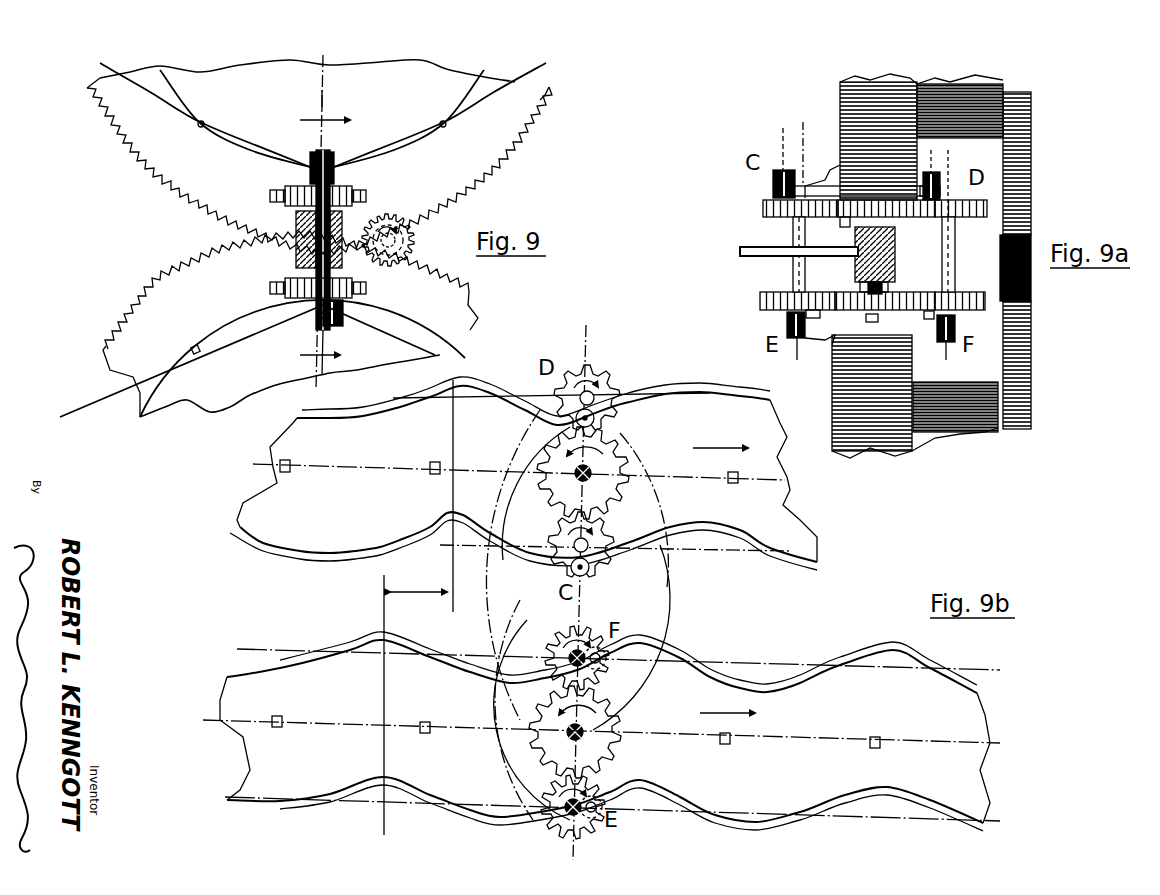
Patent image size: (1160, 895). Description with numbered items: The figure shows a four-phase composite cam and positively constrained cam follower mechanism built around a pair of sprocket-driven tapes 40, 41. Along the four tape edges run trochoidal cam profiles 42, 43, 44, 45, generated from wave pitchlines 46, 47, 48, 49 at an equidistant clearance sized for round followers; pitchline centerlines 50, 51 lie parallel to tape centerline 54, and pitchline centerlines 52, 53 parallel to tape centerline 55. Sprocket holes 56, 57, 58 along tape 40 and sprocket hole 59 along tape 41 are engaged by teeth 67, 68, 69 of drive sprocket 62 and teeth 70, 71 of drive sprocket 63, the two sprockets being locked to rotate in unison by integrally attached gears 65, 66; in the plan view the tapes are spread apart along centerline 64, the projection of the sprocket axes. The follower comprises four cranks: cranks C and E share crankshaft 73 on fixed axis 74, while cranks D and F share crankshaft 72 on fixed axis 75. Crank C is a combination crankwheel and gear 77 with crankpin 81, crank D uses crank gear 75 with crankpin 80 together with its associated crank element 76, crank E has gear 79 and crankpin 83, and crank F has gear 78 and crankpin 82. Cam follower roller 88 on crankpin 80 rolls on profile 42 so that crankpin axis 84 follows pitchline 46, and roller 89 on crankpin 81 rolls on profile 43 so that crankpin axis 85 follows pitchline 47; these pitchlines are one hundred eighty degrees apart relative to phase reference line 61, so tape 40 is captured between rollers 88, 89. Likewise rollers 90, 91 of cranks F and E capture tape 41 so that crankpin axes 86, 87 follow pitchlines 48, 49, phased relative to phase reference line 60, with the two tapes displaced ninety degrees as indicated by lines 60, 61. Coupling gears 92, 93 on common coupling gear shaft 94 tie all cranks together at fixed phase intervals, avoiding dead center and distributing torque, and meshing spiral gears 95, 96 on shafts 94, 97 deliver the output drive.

In FIG. 9, the tape 40 is at (104, 66).
In FIG. 9A, the tape 40 is at (838, 166).
In FIG. 9B, the tape 40 is at (815, 538).
In FIG. 9, the tape 41 is at (97, 400).
In FIG. 9A, the tape 41 is at (822, 345).
In FIG. 9B, the tape 41 is at (985, 782).
In FIG. 9B, the cam profile 42 is at (668, 408).
In FIG. 9B, the cam profile 43 is at (736, 531).
In FIG. 9B, the cam profile 44 is at (850, 681).
In FIG. 9B, the cam profile 45 is at (889, 787).
In FIG. 9B, the trochoidal wave pitchline 46 is at (690, 386).
In FIG. 9B, the trochoidal wave pitchline 47 is at (768, 562).
In FIG. 9B, the trochoidal wave pitchline 48 is at (878, 654).
In FIG. 9B, the trochoidal wave pitchline 49 is at (946, 819).
In FIG. 9B, the pitchline centerline 50 is at (530, 398).
In FIG. 9B, the pitchline centerline 51 is at (718, 553).
In FIG. 9B, the pitchline centerline 52 is at (781, 663).
In FIG. 9B, the pitchline centerline 53 is at (880, 818).
In FIG. 9B, the tape centerline 54 is at (485, 470).
In FIG. 9B, the tape centerline 55 is at (997, 743).
In FIG. 9B, the sprocket hole 56 is at (430, 466).
In FIG. 9B, the sprocket hole 57 is at (572, 483).
In FIG. 9B, the sprocket hole 58 is at (729, 475).
In FIG. 9B, the sprocket hole 59 is at (425, 721).
In FIG. 9B, the phase reference line 60 is at (384, 587).
In FIG. 9B, the phase reference line 61 is at (453, 564).
In FIG. 9, the drive sprocket 62 is at (163, 70).
In FIG. 9A, the drive sprocket 62 is at (840, 96).
In FIG. 9, the drive sprocket 63 is at (140, 417).
In FIG. 9A, the drive sprocket 63 is at (885, 454).
In FIG. 9B, the centerline 64 is at (588, 348).
In FIG. 9, the gear 65 is at (146, 170).
In FIG. 9A, the gear 65 is at (1032, 138).
In FIG. 9, the gear 66 is at (152, 300).
In FIG. 9A, the gear 66 is at (1032, 368).
In FIG. 9, the tooth 67 is at (201, 128).
In FIG. 9A, the tooth 68 is at (865, 193).
In FIG. 9, the tooth 69 is at (443, 128).
In FIG. 9, the tooth 70 is at (195, 346).
In FIG. 9, the tooth 71 is at (319, 316).
In FIG. 9A, the tooth 71 is at (870, 318).
In FIG. 9A, the crankshaft 72 is at (956, 262).
In FIG. 9B, the crankshaft 72 is at (577, 565).
In FIG. 9, the crankshaft 73 is at (300, 205).
In FIG. 9A, the crankshaft 73 is at (793, 276).
In FIG. 9B, the crankshaft 73 is at (511, 710).
In FIG. 9, the axis 74 is at (325, 103).
In FIG. 9A, the axis 74 is at (803, 140).
In FIG. 9A, the axis 75 is at (949, 155).
In FIG. 9A, the upper right gear 76 is at (965, 218).
In FIG. 9B, the upper right gear 76 is at (597, 384).
In FIG. 9, the combination crankwheel and gear 77 is at (305, 179).
In FIG. 9A, the combination crankwheel and gear 77 is at (763, 207).
In FIG. 9B, the combination crankwheel and gear 77 is at (608, 562).
In FIG. 9A, the gear 78 is at (958, 298).
In FIG. 9B, the gear 78 is at (567, 638).
In FIG. 9, the gear 79 is at (287, 294).
In FIG. 9A, the gear 79 is at (760, 300).
In FIG. 9B, the gear 79 is at (555, 826).
In FIG. 9A, the crankpin 80 is at (910, 193).
In FIG. 9A, the crankpin 81 is at (813, 193).
In FIG. 9A, the crankpin 82 is at (918, 318).
In FIG. 9A, the crankpin 83 is at (824, 316).
In FIG. 9A, the crankpin axis 84 is at (929, 155).
In FIG. 9A, the crankpin axis 85 is at (783, 142).
In FIG. 9A, the crankpin axis 86 is at (948, 350).
In FIG. 9, the crankpin axis 87 is at (332, 330).
In FIG. 9A, the crankpin axis 87 is at (797, 345).
In FIG. 9A, the cam follower roller 88 is at (942, 188).
In FIG. 9B, the cam follower roller 88 is at (596, 416).
In FIG. 9, the cam follower roller 89 is at (336, 176).
In FIG. 9A, the cam follower roller 89 is at (773, 188).
In FIG. 9B, the cam follower roller 89 is at (590, 576).
In FIG. 9A, the cam follower roller 90 is at (956, 325).
In FIG. 9B, the cam follower roller 90 is at (595, 650).
In FIG. 9, the cam follower roller 91 is at (345, 313).
In FIG. 9A, the cam follower roller 91 is at (787, 322).
In FIG. 9B, the cam follower roller 91 is at (594, 818).
In FIG. 9, the coupling gear 92 is at (367, 197).
In FIG. 9A, the coupling gear 92 is at (897, 218).
In FIG. 9B, the coupling gear 92 is at (592, 482).
In FIG. 9, the coupling gear 93 is at (367, 290).
In FIG. 9A, the coupling gear 93 is at (900, 296).
In FIG. 9B, the coupling gear 93 is at (612, 740).
In FIG. 9A, the coupling gear shaft 94 is at (842, 222).
In FIG. 9B, the coupling gear shaft 94 is at (585, 623).
In FIG. 9, the spiral gear 95 is at (298, 252).
In FIG. 9A, the spiral gear 95 is at (896, 262).
In FIG. 9, the spiral gear 96 is at (416, 242).
In FIG. 9A, the spiral gear 96 is at (860, 287).
In FIG. 9A, the shaft 97 is at (740, 250).